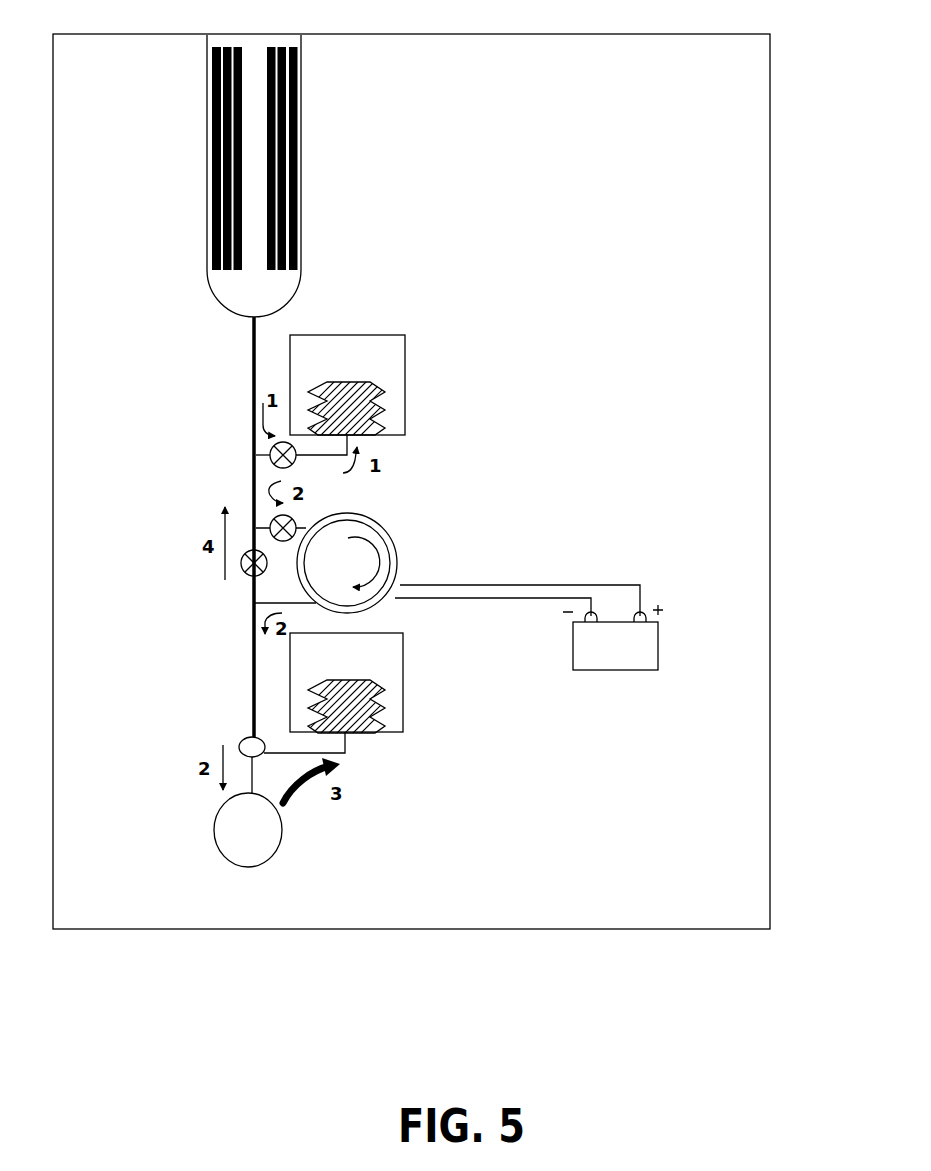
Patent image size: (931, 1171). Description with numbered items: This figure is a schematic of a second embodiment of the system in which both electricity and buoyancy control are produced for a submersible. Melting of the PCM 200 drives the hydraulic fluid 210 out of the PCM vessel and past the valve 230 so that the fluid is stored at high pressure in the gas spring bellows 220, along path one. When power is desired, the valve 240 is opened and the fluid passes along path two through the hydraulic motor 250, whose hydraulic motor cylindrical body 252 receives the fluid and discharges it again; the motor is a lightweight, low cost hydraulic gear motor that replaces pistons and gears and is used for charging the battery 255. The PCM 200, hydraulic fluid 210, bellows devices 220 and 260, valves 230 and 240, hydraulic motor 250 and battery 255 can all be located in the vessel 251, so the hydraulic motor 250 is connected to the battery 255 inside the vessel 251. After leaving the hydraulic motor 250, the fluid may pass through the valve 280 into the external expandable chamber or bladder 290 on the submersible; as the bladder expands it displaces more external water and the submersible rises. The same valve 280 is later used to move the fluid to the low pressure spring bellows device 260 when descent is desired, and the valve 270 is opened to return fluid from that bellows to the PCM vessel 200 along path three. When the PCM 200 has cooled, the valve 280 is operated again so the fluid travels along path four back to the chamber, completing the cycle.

The PCM 200 is at (303, 100).
The hydraulic fluid 210 is at (250, 350).
The gas spring bellows 220 is at (380, 335).
The valve 230 is at (250, 452).
The valve 240 is at (296, 520).
The hydraulic motor 250 is at (379, 553).
The vessel 251 is at (200, 930).
The hydraulic motor cylindrical body 252 is at (383, 538).
The battery 255 is at (662, 634).
The spring bellows device 260 is at (405, 675).
The valve 270 is at (247, 577).
The valve 280 is at (244, 739).
The external expandable chamber or bladder 290 is at (281, 840).